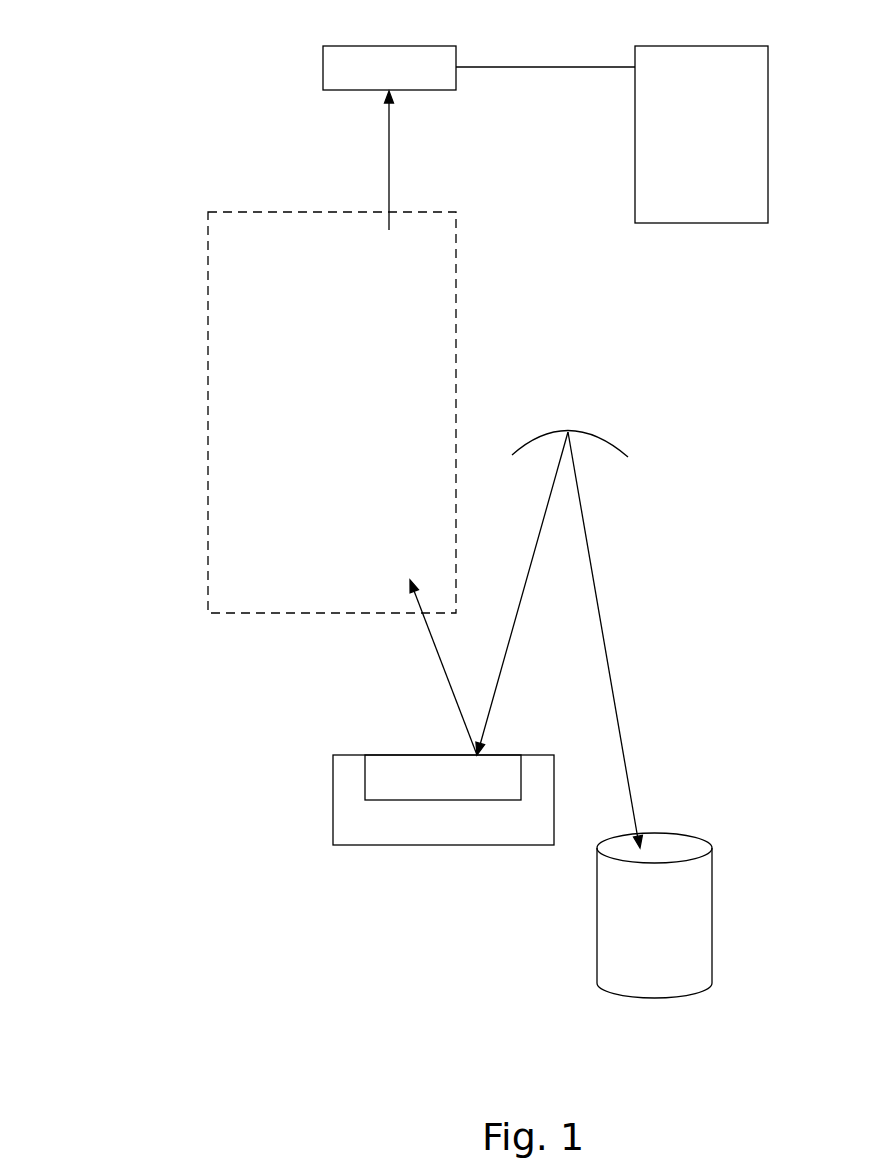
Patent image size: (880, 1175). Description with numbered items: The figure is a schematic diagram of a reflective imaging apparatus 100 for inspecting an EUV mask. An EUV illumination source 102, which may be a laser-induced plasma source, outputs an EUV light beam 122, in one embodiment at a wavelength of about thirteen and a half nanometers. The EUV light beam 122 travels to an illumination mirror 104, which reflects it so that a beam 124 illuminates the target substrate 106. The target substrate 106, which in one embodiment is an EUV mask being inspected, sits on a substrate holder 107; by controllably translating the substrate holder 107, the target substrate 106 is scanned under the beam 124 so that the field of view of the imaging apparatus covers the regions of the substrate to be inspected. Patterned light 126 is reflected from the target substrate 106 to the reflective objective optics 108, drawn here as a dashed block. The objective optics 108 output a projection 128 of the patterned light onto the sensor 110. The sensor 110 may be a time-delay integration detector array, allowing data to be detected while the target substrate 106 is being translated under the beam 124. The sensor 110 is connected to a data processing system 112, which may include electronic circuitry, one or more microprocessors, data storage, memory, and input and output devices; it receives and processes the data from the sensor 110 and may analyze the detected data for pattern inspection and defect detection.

The apparatus 100 is at (138, 63).
The EUV illumination source 102 is at (642, 953).
The illumination mirror 104 is at (603, 433).
The target substrate 106 is at (427, 787).
The substrate holder 107 is at (427, 830).
The objective optics 108 is at (318, 389).
The sensor 110 is at (406, 78).
The data processing system 112 is at (684, 144).
The EUV light beam 122 is at (598, 610).
The beam 124 is at (515, 618).
The patterned light 126 is at (450, 695).
The projection 128 is at (389, 152).